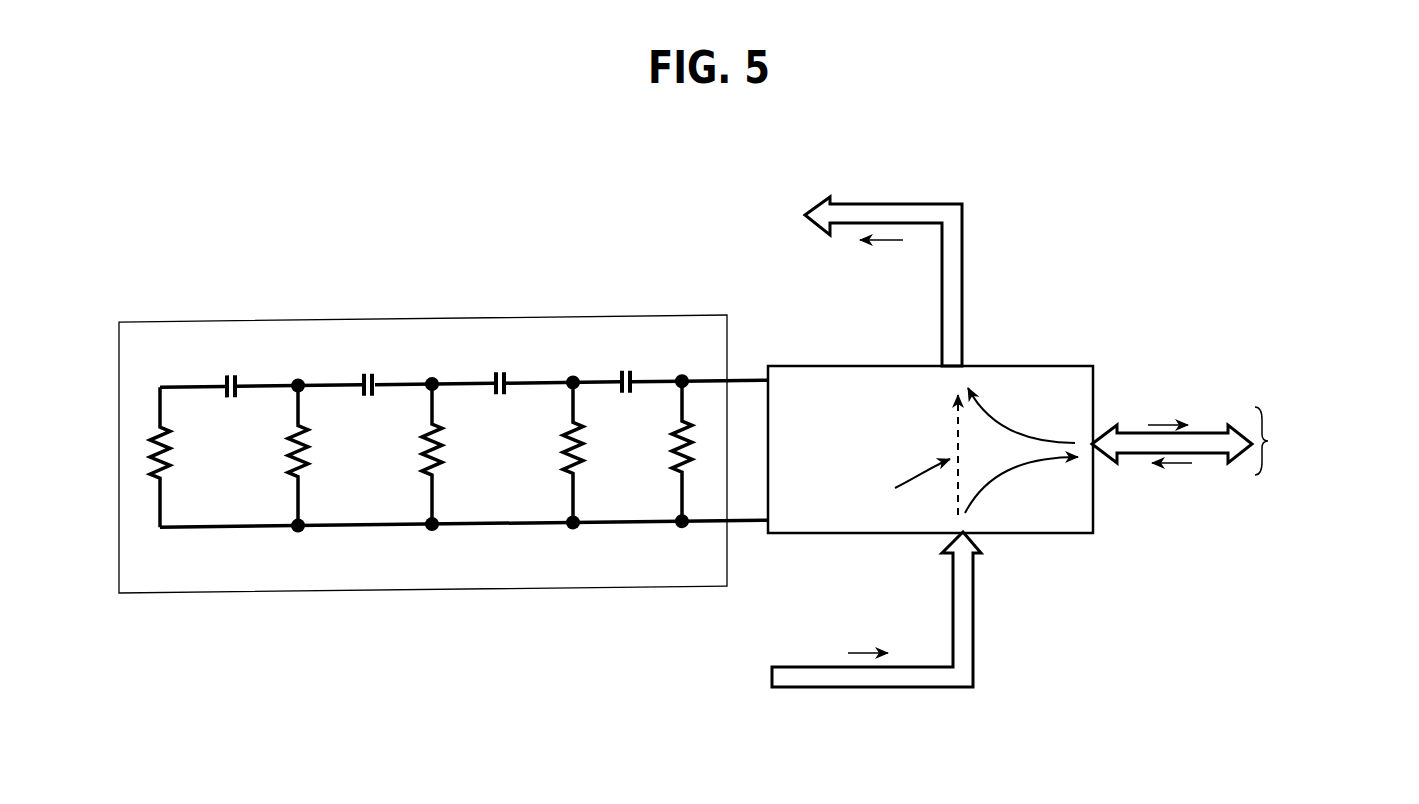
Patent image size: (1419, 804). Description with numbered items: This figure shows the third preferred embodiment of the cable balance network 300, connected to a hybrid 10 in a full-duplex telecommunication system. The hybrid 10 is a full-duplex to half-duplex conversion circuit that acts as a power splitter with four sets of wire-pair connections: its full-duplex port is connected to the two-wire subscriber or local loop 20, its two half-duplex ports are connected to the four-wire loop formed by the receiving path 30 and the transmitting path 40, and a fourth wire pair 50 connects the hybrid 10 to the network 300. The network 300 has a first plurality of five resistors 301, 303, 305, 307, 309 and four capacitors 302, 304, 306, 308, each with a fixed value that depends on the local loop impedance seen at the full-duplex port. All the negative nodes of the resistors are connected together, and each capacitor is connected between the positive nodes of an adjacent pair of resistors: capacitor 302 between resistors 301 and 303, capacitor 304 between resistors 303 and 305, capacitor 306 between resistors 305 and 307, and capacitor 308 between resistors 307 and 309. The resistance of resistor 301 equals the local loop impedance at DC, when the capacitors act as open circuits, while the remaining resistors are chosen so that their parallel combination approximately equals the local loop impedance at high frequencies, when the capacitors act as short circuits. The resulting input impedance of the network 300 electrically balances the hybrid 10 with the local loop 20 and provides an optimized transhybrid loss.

The hybrid 10 is at (1038, 363).
The two-wire subscriber or local loop 20 is at (1200, 455).
The path for receiving 30 is at (889, 200).
The path for transmitting 40 is at (907, 688).
The fourth wire pair 50 is at (737, 380).
The cable balance network 300 is at (401, 318).
The resistor 301 is at (677, 446).
The capacitor 302 is at (633, 370).
The resistor 303 is at (568, 446).
The capacitor 304 is at (507, 370).
The resistor 305 is at (425, 448).
The capacitor 306 is at (375, 372).
The resistor 307 is at (292, 448).
The capacitor 308 is at (237, 372).
The resistor 309 is at (150, 452).